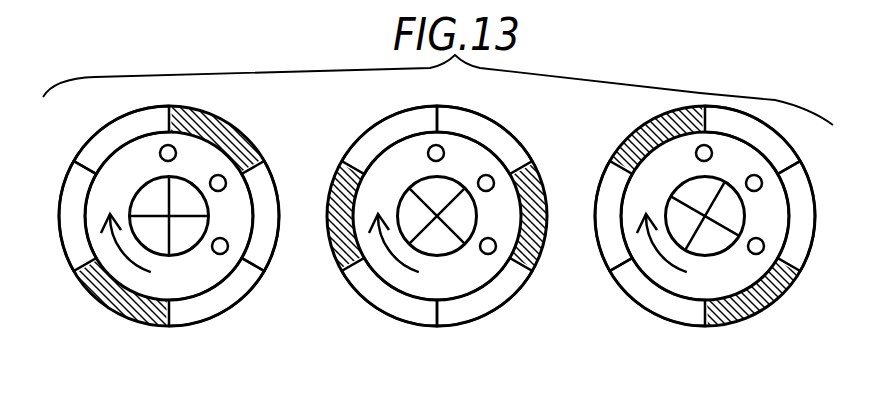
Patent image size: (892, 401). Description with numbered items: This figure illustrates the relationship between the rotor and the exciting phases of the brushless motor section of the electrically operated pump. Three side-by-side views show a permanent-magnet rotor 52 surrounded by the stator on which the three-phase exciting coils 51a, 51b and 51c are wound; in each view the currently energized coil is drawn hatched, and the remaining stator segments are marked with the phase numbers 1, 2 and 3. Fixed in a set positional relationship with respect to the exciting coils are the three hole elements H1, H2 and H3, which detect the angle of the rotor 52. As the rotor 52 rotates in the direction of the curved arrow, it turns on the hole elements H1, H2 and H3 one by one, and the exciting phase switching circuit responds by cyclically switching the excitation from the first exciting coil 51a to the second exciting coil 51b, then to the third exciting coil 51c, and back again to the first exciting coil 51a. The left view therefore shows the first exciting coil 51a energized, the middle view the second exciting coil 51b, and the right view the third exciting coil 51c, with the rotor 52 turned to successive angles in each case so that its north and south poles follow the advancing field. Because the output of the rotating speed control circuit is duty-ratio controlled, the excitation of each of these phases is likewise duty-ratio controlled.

The stator coil phase 1 segment 1 is at (571, 216).
The stator coil phase 2 segment 2 is at (437, 216).
The stator coil phase 3 segment 3 is at (303, 216).
The first exciting coil 51a is at (186, 222).
The second exciting coil 51b is at (435, 243).
The third exciting coil 51c is at (699, 232).
The rotor 52 is at (437, 273).
The hole element H1 is at (419, 160).
The hole element H2 is at (474, 174).
The hole element H3 is at (493, 235).